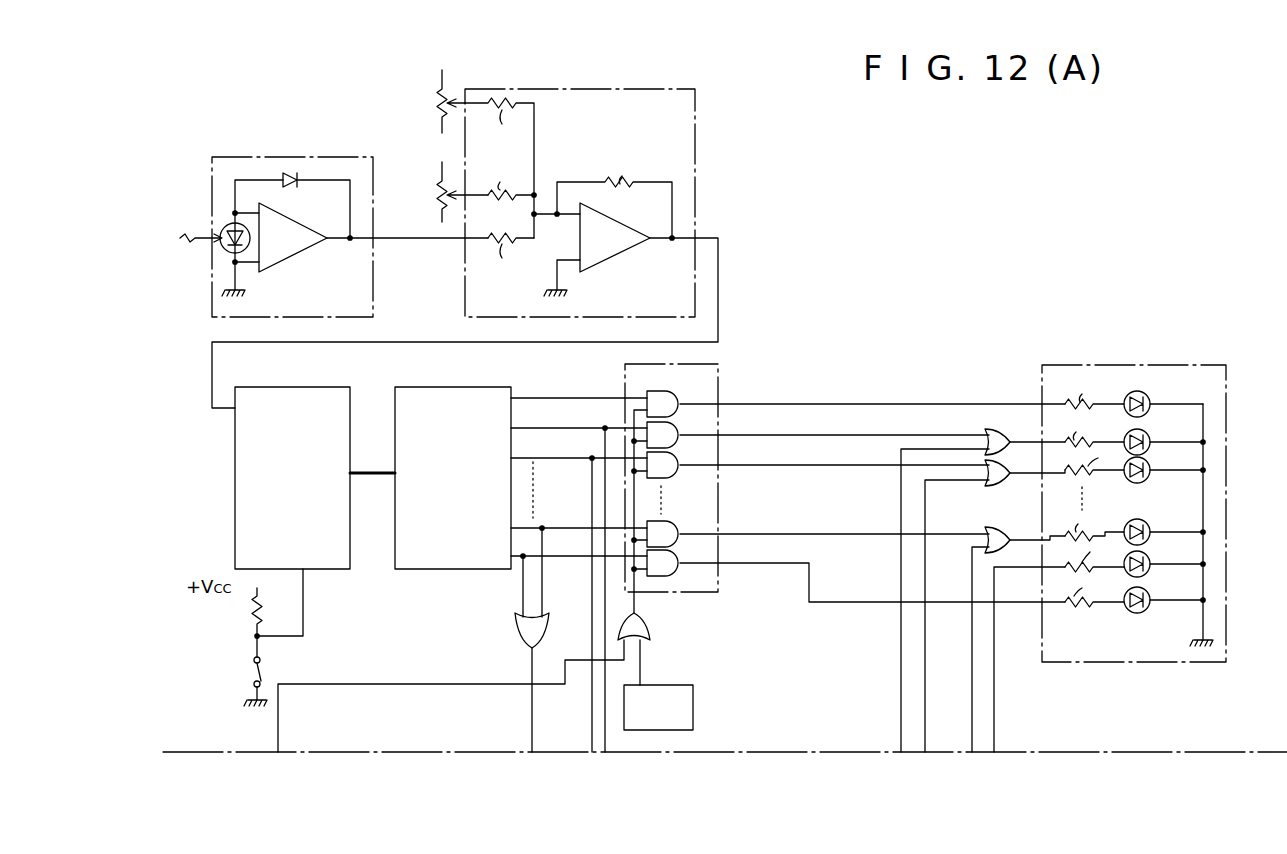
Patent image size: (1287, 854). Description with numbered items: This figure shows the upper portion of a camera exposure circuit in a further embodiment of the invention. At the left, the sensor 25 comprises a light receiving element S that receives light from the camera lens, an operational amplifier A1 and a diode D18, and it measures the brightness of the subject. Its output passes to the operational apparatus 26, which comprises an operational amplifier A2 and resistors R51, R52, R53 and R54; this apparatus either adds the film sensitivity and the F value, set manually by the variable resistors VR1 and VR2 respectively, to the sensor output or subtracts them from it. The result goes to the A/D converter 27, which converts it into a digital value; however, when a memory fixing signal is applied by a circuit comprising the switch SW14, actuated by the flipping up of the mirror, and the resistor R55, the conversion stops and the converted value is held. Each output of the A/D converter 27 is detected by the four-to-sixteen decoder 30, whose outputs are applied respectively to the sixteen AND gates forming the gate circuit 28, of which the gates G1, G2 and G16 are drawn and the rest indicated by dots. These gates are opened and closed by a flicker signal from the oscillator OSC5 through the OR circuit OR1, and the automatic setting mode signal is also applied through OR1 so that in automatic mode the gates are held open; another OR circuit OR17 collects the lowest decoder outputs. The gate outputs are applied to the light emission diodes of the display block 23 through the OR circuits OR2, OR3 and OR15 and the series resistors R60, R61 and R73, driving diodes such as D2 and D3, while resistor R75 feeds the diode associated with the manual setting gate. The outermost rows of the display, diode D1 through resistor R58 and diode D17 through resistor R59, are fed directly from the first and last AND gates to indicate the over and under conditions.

The display unit 23 is at (1226, 428).
The sensor 25 is at (332, 157).
The operational apparatus 26 is at (695, 128).
The A/D converter 27 is at (292, 387).
The gate circuit 28 is at (718, 384).
The 4-16 decoder 30 is at (458, 387).
The light receiving element S is at (229, 248).
The operational amplifier A1 is at (361, 237).
The operational amplifier A2 is at (597, 249).
The diode D18 is at (294, 187).
The variable resistor VR1 is at (438, 94).
The variable resistor VR2 is at (440, 204).
The resistor R51 is at (508, 256).
The resistor R52 is at (506, 179).
The resistor R53 is at (499, 168).
The resistor R54 is at (614, 195).
The resistor R55 is at (250, 610).
The switch SW14 is at (254, 672).
The AND gate G1 is at (672, 392).
The AND gate G2 is at (676, 424).
The AND gate G16 is at (676, 563).
The OR circuit OR1 is at (646, 624).
The OR circuit OR2 is at (990, 430).
The OR circuit OR3 is at (990, 486).
The OR circuit OR15 is at (1002, 528).
The OR circuit OR17 is at (516, 624).
The oscillator OSC5 is at (658, 707).
The resistor R58 is at (1092, 392).
The resistor R59 is at (1094, 590).
The resistor R60 is at (1092, 430).
The resistor R61 is at (1095, 461).
The resistor R73 is at (1092, 523).
The resistor R75 is at (1094, 556).
The light emission diode D1 is at (1150, 398).
The light emission diode D2 is at (1148, 436).
The light emission diode D3 is at (1148, 464).
The light emission diode D17 is at (1148, 594).